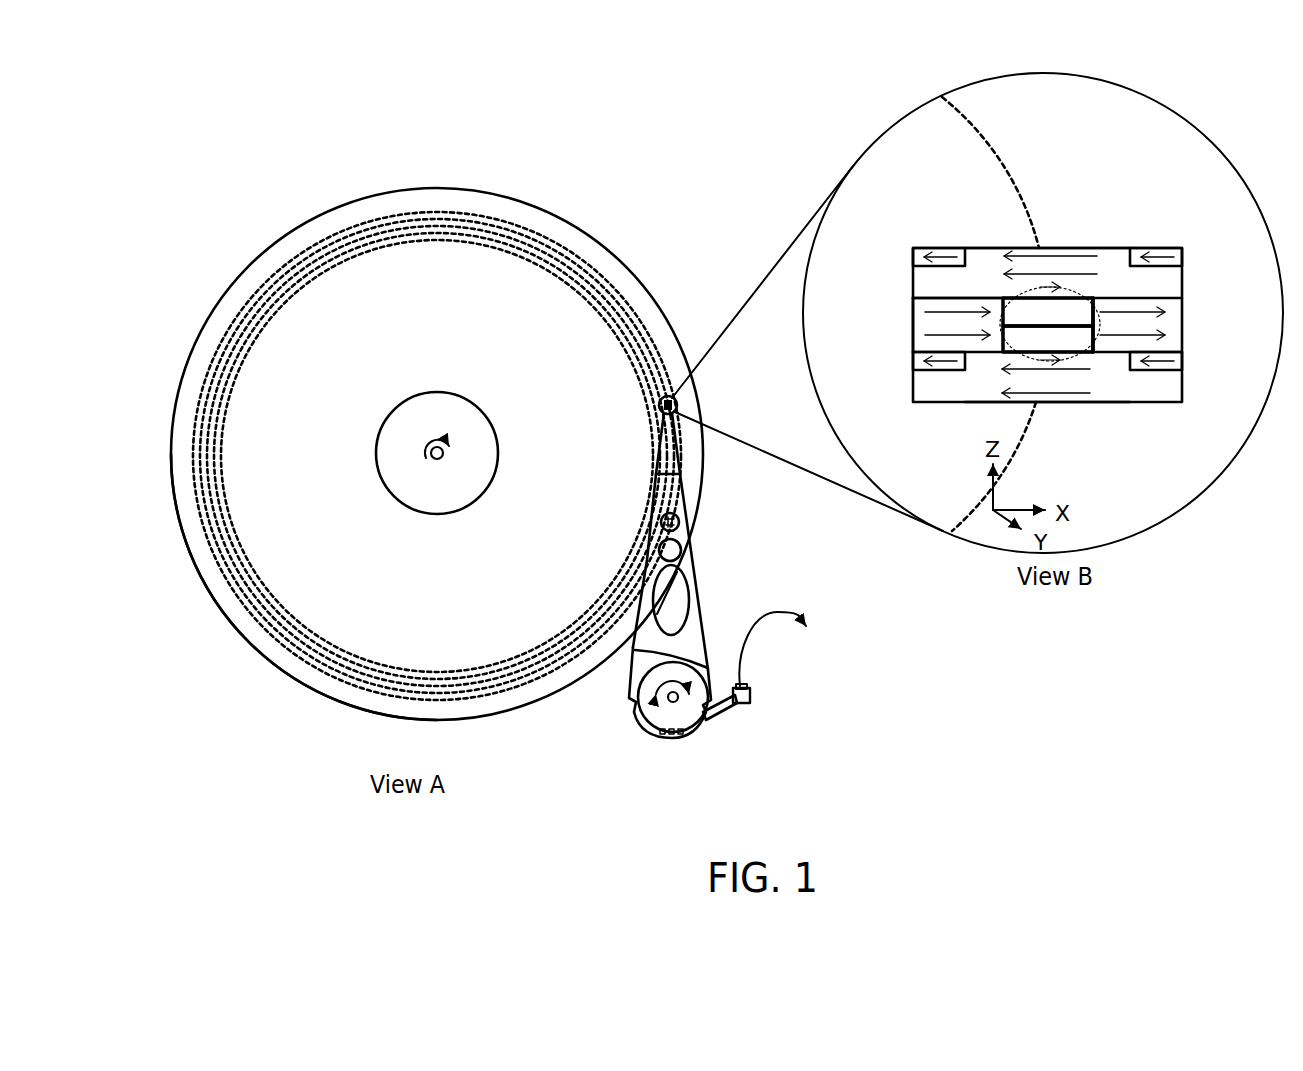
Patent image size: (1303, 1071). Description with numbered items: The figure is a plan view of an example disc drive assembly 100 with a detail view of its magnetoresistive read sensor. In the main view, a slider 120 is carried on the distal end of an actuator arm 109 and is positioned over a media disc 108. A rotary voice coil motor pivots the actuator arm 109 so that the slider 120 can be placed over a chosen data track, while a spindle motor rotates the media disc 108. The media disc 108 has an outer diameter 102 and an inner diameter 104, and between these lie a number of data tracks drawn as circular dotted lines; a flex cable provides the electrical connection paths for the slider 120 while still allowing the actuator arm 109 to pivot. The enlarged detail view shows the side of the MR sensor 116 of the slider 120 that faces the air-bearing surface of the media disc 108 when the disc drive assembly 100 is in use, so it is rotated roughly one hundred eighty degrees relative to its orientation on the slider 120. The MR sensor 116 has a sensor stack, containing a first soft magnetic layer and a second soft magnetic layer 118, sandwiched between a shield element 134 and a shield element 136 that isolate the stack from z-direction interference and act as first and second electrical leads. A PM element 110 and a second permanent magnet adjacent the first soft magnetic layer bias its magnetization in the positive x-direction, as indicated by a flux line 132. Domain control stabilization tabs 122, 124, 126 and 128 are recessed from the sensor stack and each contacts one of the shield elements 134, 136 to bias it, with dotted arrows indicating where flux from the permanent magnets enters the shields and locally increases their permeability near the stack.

The disc drive assembly 100 is at (830, 702).
The outer diameter 102 is at (245, 268).
The inner diameter 104 is at (377, 466).
The media disc 108 is at (282, 672).
The actuator arm 109 is at (694, 562).
The PM element 110 is at (1183, 314).
The MR sensor 116 is at (1072, 180).
The second soft magnetic layer 118 is at (1048, 312).
The slider 120 is at (677, 412).
The DCS tab 122 is at (1183, 362).
The DCS tab 124 is at (1160, 248).
The DCS tab 126 is at (941, 247).
The DCS tab 128 is at (913, 364).
The flux line 132 is at (925, 312).
The shield element 134 is at (1052, 247).
The shield element 136 is at (1052, 403).